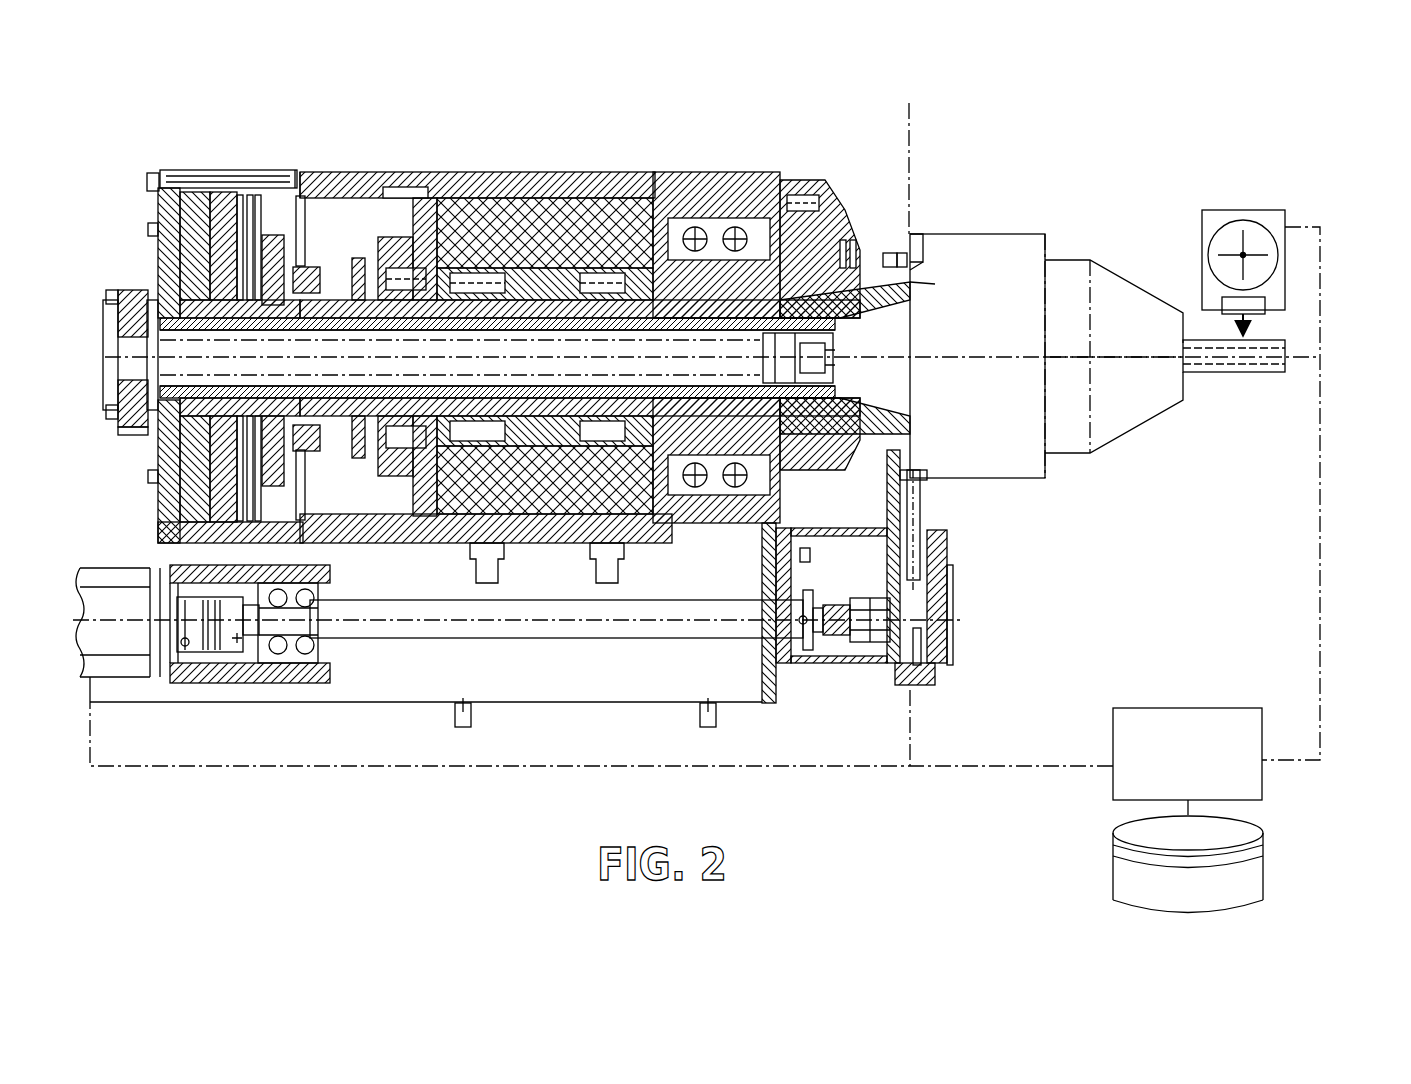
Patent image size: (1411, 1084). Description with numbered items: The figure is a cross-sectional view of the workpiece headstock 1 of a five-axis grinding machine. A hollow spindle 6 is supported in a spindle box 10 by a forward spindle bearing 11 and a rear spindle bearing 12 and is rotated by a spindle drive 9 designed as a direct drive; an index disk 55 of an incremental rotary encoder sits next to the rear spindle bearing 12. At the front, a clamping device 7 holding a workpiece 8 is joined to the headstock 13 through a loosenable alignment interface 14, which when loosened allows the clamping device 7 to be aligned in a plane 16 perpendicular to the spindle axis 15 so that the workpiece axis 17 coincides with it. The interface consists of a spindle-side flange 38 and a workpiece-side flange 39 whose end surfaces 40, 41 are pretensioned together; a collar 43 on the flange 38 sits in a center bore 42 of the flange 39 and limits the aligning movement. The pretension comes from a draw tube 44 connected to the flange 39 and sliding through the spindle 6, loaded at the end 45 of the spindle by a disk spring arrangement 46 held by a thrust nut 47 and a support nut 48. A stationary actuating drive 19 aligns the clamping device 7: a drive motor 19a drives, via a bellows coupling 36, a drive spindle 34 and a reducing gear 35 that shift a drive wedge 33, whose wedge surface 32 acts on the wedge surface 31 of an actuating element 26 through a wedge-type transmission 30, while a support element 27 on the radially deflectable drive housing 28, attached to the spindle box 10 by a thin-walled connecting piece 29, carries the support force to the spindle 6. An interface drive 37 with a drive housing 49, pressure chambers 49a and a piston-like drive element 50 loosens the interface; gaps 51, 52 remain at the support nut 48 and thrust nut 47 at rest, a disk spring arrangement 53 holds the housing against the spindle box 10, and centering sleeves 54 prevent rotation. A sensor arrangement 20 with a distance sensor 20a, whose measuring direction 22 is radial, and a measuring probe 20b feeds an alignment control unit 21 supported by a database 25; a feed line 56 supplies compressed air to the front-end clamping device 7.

The workpiece headstock 1 is at (120, 176).
The spindle 6 is at (525, 277).
The clamping device 7 is at (1038, 233).
The workpiece 8 is at (1253, 365).
The spindle drive 9 is at (505, 188).
The spindle box 10 is at (653, 180).
The forward spindle bearing 11 is at (721, 212).
The rear spindle bearing 12 is at (401, 261).
The headstock 13 is at (877, 252).
The alignment interface 14 is at (998, 233).
The spindle axis 15 is at (975, 357).
The plane 16 is at (915, 114).
The workpiece axis 17 is at (1297, 350).
The actuating drive 19 is at (945, 683).
The drive motor 19a is at (137, 635).
The sensor arrangement 20 is at (1288, 210).
The distance sensor 20a is at (1228, 303).
The measuring probe 20b is at (1245, 250).
The alignment control unit 21 is at (1196, 705).
The measuring direction 22 is at (1257, 326).
The database 25 is at (1210, 873).
The actuating element 26 is at (923, 525).
The support element 27 is at (900, 262).
The drive housing 28 is at (947, 580).
The connecting piece 29 is at (930, 547).
The transmission 30 is at (937, 607).
The wedge surface 31 is at (947, 620).
The wedge surface 32 is at (897, 685).
The drive wedge 33 is at (868, 645).
The drive spindle 34 is at (595, 640).
The reducing gear 35 is at (812, 655).
The bellows coupling 36 is at (233, 640).
The interface drive 37 is at (168, 214).
The flange 38 is at (902, 298).
The flange 39 is at (920, 278).
The end surface 40 is at (860, 260).
The end surface 41 is at (915, 270).
The center bore 42 is at (925, 260).
The collar 43 is at (868, 265).
The draw tube 44 is at (477, 313).
The end of the spindle 45 is at (268, 308).
The disk spring arrangement 46 is at (268, 256).
The thrust nut 47 is at (255, 325).
The support nut 48 is at (337, 280).
The drive housing 49 is at (196, 168).
The pressure chambers 49a is at (190, 172).
The drive element 50 is at (192, 279).
The gap 51 is at (306, 266).
The gap 52 is at (247, 290).
The disk spring arrangement 53 is at (300, 612).
The centering sleeves 54 is at (320, 470).
The index disk 55 is at (358, 246).
The feed line 56 is at (137, 423).